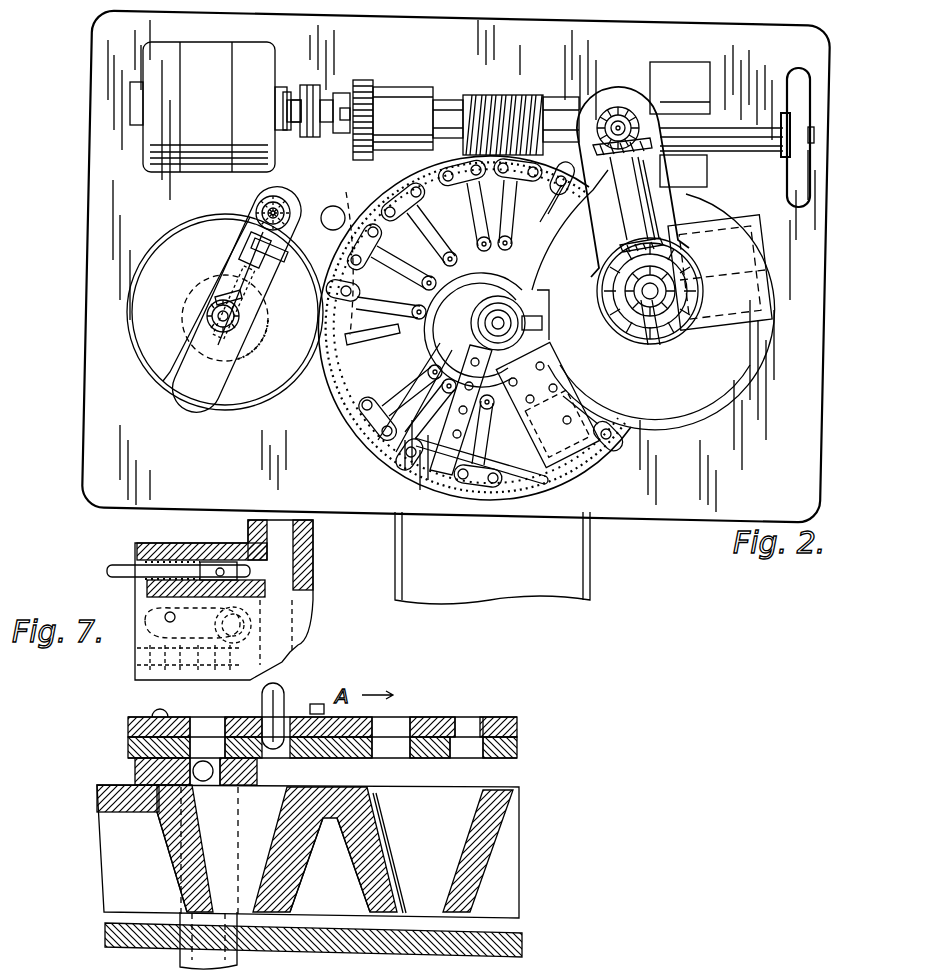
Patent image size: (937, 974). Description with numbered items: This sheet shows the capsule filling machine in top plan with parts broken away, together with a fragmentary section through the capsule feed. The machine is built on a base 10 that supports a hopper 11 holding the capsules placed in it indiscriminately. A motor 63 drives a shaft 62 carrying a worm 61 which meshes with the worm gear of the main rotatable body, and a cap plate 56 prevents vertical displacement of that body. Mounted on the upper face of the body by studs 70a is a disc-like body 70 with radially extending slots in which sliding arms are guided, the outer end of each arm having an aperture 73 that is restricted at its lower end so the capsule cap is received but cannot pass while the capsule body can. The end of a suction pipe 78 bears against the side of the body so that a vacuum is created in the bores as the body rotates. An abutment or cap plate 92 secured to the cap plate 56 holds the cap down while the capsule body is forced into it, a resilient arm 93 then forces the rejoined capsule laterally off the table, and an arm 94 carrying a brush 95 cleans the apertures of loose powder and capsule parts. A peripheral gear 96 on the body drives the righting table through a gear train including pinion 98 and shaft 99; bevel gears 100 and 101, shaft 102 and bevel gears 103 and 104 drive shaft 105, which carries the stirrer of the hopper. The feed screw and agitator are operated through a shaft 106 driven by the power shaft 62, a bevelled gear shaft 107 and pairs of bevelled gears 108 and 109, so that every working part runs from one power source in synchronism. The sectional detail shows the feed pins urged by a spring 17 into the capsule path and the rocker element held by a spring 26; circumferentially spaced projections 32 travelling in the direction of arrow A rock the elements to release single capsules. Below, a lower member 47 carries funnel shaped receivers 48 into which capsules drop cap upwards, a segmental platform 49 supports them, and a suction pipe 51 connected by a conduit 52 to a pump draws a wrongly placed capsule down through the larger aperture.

In FIG. 2, the base 10 is at (706, 512).
In FIG. 2, the hopper 11 is at (224, 410).
In FIG. 2, the cap plate 56 is at (352, 420).
In FIG. 2, the worm 61 is at (500, 110).
In FIG. 2, the shaft 62 is at (432, 105).
In FIG. 2, the motor 63 is at (166, 160).
In FIG. 2, the disc-like body 70 is at (386, 446).
In FIG. 2, the studs 70a is at (395, 324).
In FIG. 2, the aperture 73 is at (476, 498).
In FIG. 2, the suction pipe 78 is at (330, 394).
In FIG. 2, the abutment or cap plate 92 is at (630, 432).
In FIG. 2, the resilient arm 93 is at (544, 500).
In FIG. 2, the arm 94 is at (462, 390).
In FIG. 2, the brush 95 is at (410, 470).
In FIG. 2, the peripheral gear 96 is at (414, 178).
In FIG. 2, the pinion 98 is at (336, 256).
In FIG. 2, the shaft 99 is at (288, 208).
In FIG. 2, the bevel gear 100 is at (273, 197).
In FIG. 2, the bevel gear 101 is at (257, 222).
In FIG. 2, the shaft 102 is at (238, 275).
In FIG. 2, the bevel gear 103 is at (212, 302).
In FIG. 2, the bevel gear 104 is at (190, 337).
In FIG. 2, the shaft 105 is at (228, 334).
In FIG. 2, the shaft 106 is at (614, 118).
In FIG. 2, the bevelled gear shaft 107 is at (600, 302).
In FIG. 2, the bevelled gears 108 is at (688, 336).
In FIG. 2, the bevelled gears 109 is at (662, 218).
In FIG. 7, the spring 17 is at (192, 556).
In FIG. 7, the spring 26 is at (229, 880).
In FIG. 7, the projections 32 is at (168, 708).
In FIG. 7, the lower member 47 is at (520, 802).
In FIG. 7, the funnel shaped receivers 48 is at (175, 845).
In FIG. 7, the platform 49 is at (523, 948).
In FIG. 7, the suction pipe 51 is at (132, 768).
In FIG. 7, the conduit 52 is at (220, 786).